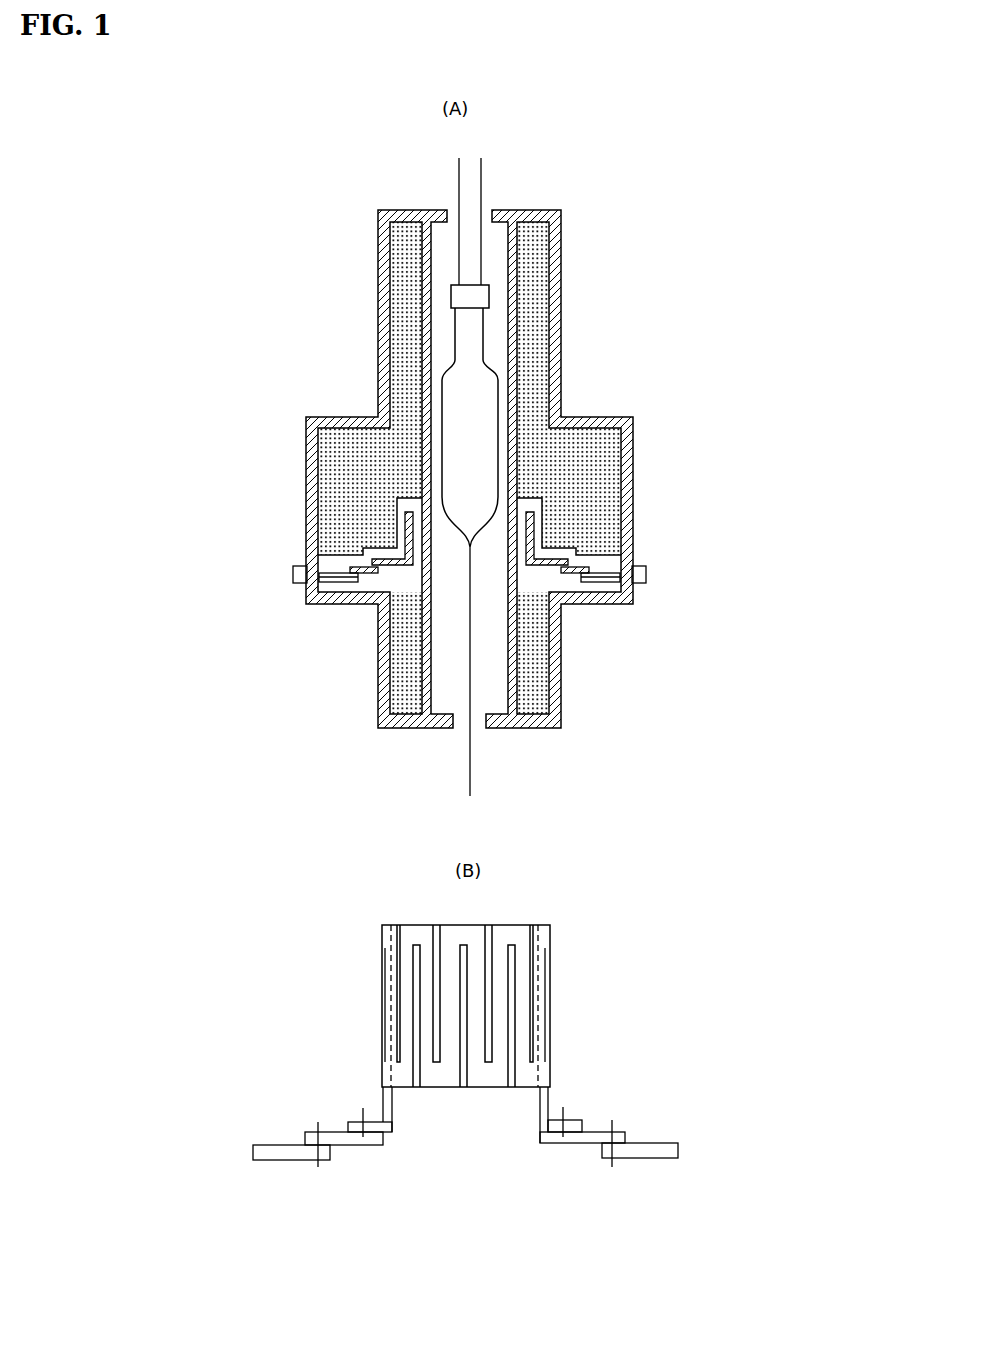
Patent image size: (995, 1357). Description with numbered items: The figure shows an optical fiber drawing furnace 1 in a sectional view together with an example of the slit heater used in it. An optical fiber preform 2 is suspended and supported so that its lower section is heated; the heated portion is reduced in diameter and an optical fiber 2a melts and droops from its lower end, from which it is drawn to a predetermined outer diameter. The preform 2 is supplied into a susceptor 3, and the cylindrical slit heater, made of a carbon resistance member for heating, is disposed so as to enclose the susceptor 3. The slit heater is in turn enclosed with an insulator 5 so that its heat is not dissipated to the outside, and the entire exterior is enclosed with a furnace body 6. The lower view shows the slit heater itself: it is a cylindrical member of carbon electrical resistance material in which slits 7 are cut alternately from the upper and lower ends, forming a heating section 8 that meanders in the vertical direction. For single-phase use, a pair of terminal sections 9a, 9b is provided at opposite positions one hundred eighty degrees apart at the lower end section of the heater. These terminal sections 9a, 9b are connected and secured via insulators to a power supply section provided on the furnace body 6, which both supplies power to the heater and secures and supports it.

The optical fiber drawing furnace 1 is at (609, 311).
The optical fiber preform 2 is at (483, 405).
The optical fiber 2a is at (472, 760).
The susceptor 3 is at (520, 463).
The insulator 5 is at (338, 472).
The furnace body 6 is at (310, 557).
The slit 7 is at (458, 1088).
The heating section 8 is at (405, 980).
The terminal section 9a is at (385, 1100).
The terminal section 9b is at (543, 1105).